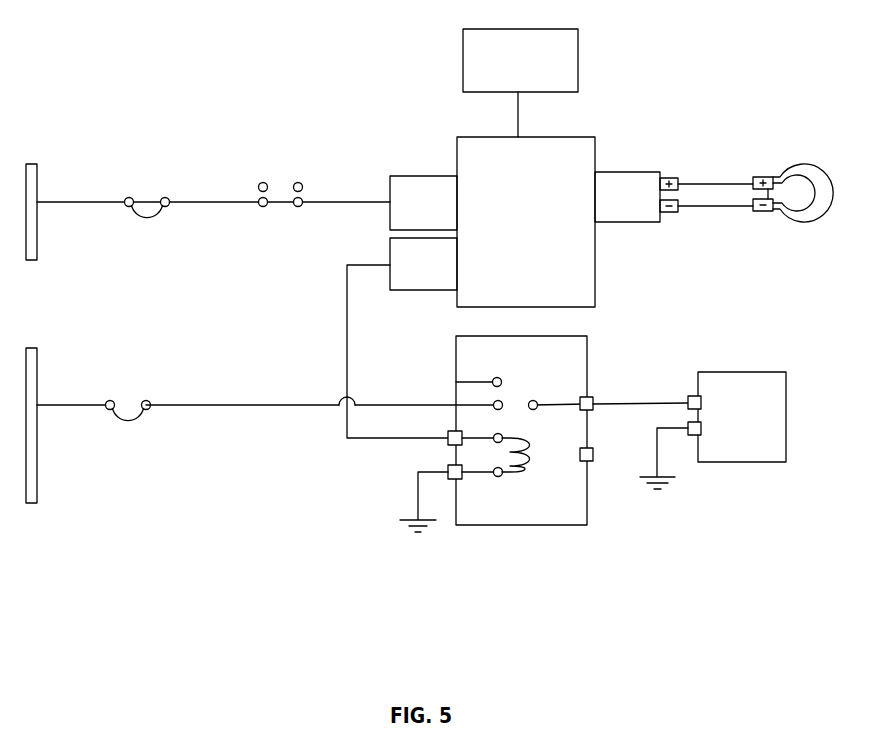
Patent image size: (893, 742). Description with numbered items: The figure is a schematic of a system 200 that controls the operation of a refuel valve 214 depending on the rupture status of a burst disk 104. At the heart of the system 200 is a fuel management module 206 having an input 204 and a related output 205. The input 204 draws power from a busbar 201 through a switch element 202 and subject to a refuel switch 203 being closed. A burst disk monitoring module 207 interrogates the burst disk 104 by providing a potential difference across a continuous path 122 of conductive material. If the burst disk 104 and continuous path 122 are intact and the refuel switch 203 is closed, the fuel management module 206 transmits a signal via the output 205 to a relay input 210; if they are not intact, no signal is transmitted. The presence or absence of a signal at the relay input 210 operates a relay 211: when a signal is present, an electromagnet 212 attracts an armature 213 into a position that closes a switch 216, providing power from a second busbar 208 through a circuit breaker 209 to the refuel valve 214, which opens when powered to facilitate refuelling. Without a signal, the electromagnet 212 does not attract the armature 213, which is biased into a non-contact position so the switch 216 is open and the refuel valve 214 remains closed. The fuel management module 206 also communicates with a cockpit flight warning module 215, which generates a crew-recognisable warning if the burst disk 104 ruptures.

The system 200 is at (170, 132).
The busbar 201 is at (37, 165).
The switch 202 is at (150, 221).
The refuel switch 203 is at (281, 193).
The input 204 is at (413, 175).
The output 205 is at (390, 247).
The fuel management module 206 is at (600, 265).
The burst disk monitoring module 207 is at (623, 168).
The burst disk 104 is at (785, 166).
The continuous path of conductive material 122 is at (800, 212).
The cockpit flight warning module 215 is at (578, 55).
The busbar 208 is at (37, 373).
The circuit breaker 209 is at (135, 425).
The relay input 210 is at (447, 439).
The relay 211 is at (546, 528).
The electromagnet 212 is at (510, 482).
The armature 213 is at (523, 397).
The refuel valve 214 is at (738, 370).
The switch 216 is at (470, 392).